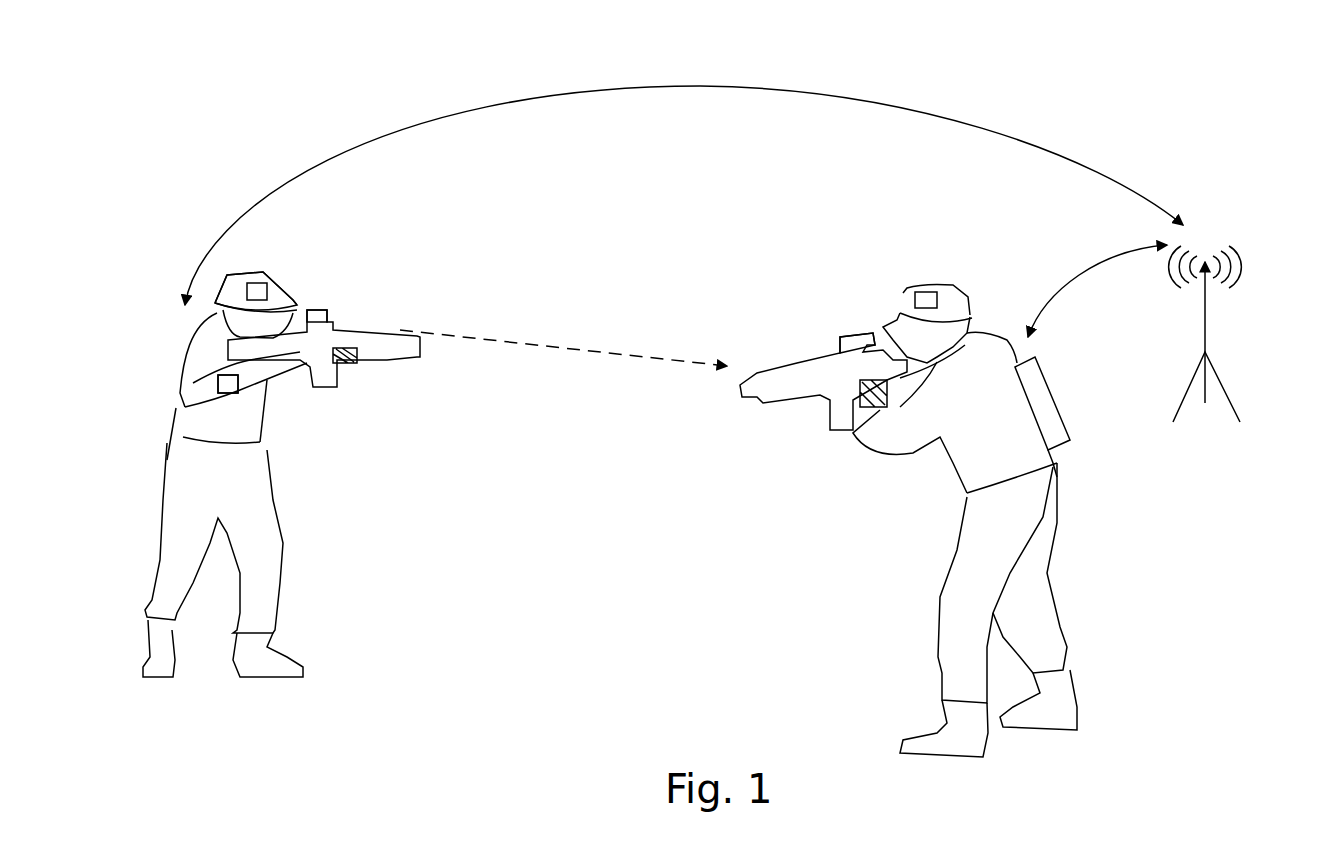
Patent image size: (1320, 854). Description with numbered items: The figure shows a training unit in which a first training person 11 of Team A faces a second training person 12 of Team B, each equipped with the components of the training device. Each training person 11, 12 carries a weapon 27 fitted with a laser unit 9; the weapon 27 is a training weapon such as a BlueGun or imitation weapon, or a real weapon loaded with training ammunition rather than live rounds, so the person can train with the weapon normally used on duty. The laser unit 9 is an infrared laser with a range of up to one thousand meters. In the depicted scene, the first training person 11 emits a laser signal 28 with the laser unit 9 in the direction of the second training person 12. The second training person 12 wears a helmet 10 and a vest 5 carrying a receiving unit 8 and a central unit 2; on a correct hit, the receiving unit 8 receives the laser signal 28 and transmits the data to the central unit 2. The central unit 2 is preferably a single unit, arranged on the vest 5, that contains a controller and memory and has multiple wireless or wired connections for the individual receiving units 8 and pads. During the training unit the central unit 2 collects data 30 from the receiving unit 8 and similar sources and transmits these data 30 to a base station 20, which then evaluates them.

The data 30 is at (684, 181).
The laser signal 28 is at (575, 347).
The first training person 11 is at (287, 455).
The second training person 12 is at (943, 520).
The helmet 10 is at (237, 270).
The receiving unit 8 is at (257, 292).
The vest 5 is at (197, 417).
The laser unit 9 is at (397, 360).
The weapon 27 is at (340, 327).
The central unit 2 is at (1060, 412).
The base station 20 is at (1207, 350).